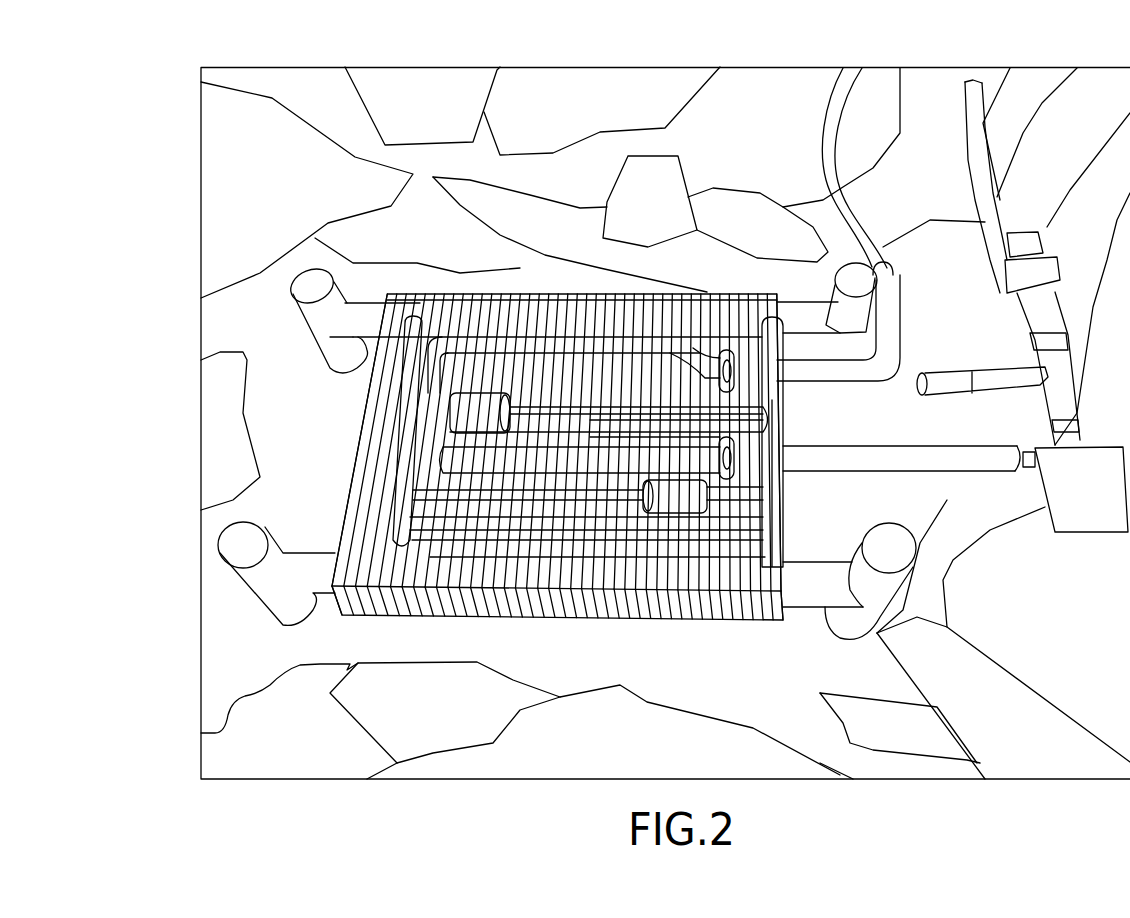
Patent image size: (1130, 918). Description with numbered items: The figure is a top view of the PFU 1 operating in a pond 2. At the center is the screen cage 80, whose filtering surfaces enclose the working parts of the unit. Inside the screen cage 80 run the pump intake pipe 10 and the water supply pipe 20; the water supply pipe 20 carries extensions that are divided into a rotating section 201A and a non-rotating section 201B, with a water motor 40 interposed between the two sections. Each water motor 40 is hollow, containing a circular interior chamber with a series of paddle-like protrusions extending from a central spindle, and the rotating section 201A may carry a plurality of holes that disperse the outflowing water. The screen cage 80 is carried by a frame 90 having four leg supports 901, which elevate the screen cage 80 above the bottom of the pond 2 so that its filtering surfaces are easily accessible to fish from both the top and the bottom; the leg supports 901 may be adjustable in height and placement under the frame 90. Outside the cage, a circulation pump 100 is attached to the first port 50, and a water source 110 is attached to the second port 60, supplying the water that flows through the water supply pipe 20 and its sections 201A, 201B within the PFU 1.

The PFU 1 is at (345, 517).
The pond 2 is at (684, 67).
The pump intake pipe 10 is at (580, 462).
The water supply pipe 20 is at (697, 360).
The water motor 40 is at (463, 408).
The first port 50 is at (802, 466).
The second port 60 is at (800, 368).
The screen cage 80 is at (512, 292).
The frame 90 is at (367, 298).
The circulation pump 100 is at (1110, 502).
The water source 110 is at (823, 108).
The rotating section 201A is at (618, 413).
The non-rotating section 201B is at (570, 347).
The leg supports 901 is at (857, 262).